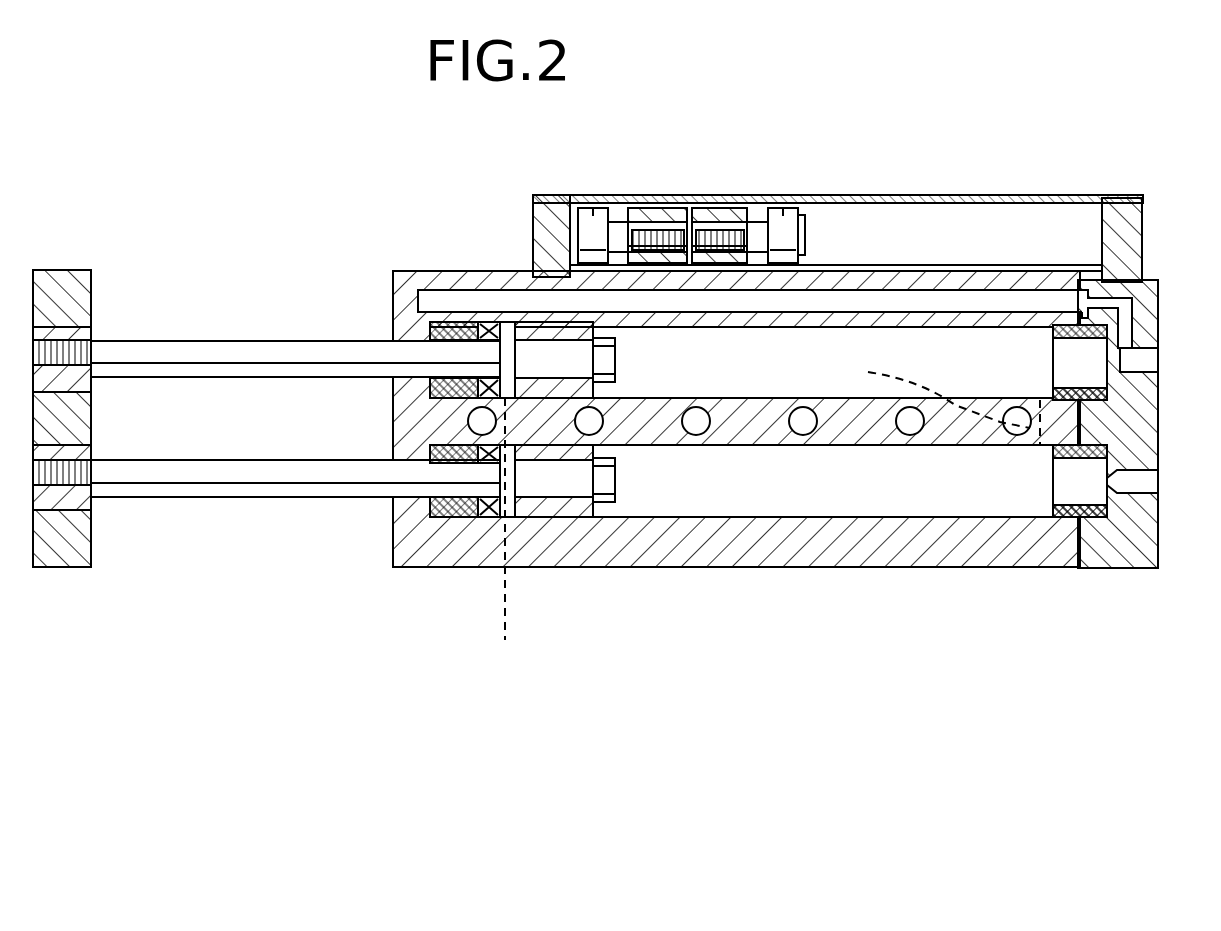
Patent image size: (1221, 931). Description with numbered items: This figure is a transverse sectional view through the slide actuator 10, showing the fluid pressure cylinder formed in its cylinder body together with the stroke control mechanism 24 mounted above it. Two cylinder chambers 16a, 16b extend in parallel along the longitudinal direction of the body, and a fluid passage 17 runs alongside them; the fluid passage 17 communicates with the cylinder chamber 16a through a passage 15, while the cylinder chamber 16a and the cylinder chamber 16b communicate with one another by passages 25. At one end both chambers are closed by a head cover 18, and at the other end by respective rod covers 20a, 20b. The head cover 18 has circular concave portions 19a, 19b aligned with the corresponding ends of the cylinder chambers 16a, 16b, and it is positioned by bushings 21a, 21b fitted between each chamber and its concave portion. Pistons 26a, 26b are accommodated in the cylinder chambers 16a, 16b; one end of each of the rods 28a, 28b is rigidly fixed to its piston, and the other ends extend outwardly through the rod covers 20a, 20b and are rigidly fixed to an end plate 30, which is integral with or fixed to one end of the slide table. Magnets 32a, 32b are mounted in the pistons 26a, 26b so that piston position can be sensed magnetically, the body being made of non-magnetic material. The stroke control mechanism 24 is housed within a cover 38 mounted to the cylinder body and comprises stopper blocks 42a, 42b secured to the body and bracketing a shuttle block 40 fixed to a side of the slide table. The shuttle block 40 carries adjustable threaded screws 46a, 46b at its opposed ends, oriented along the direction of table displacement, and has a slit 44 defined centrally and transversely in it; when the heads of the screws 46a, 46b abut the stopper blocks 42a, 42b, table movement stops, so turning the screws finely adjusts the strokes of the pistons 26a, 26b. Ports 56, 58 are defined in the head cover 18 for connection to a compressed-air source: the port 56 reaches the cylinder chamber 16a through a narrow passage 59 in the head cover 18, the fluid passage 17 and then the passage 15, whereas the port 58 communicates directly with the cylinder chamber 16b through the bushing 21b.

The slide actuator 10 is at (296, 168).
The passage 15 is at (447, 272).
The cylinder chamber 16a is at (905, 345).
The cylinder chamber 16b is at (820, 490).
The fluid passage 17 is at (888, 302).
The head cover 18 is at (1118, 555).
The circular concave portion 19a is at (1062, 356).
The circular concave portion 19b is at (1055, 473).
The rod cover 20a is at (415, 273).
The rod cover 20b is at (470, 520).
The bushing 21a is at (1080, 390).
The bushing 21b is at (1055, 488).
The stroke control mechanism 24 is at (826, 188).
The passages 25 is at (515, 659).
The piston 26a is at (522, 272).
The piston 26b is at (598, 520).
The rod 28a is at (213, 345).
The rod 28b is at (213, 497).
The end plate 30 is at (77, 417).
The magnet 32a is at (490, 272).
The magnet 32b is at (548, 520).
The cover 38 is at (867, 195).
The shuttle block 40 is at (645, 195).
The stopper block 42a is at (552, 205).
The stopper block 42b is at (1122, 218).
The slit 44 is at (690, 195).
The threaded screw 46a is at (593, 195).
The threaded screw 46b is at (780, 195).
The port 56 is at (1148, 360).
The port 58 is at (1147, 481).
The narrow passage 59 is at (1127, 322).